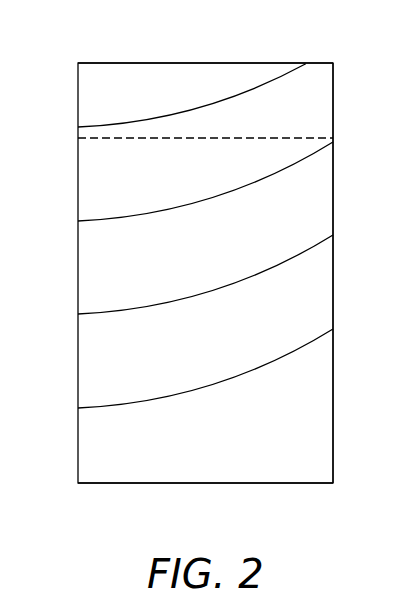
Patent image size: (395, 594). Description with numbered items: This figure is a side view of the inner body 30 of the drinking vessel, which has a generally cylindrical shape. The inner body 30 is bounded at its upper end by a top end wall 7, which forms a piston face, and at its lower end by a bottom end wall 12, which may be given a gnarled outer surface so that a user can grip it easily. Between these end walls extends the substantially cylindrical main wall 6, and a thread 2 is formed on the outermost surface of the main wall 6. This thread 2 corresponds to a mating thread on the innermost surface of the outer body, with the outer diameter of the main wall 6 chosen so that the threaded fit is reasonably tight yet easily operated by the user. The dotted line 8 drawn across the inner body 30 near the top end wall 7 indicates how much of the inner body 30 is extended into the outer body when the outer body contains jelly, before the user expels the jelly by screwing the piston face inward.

The inner body 30 is at (104, 50).
The top end wall 7 is at (313, 62).
The main wall 6 is at (333, 188).
The dotted line 8 is at (313, 138).
The thread 2 is at (92, 127).
The bottom end wall 12 is at (207, 484).